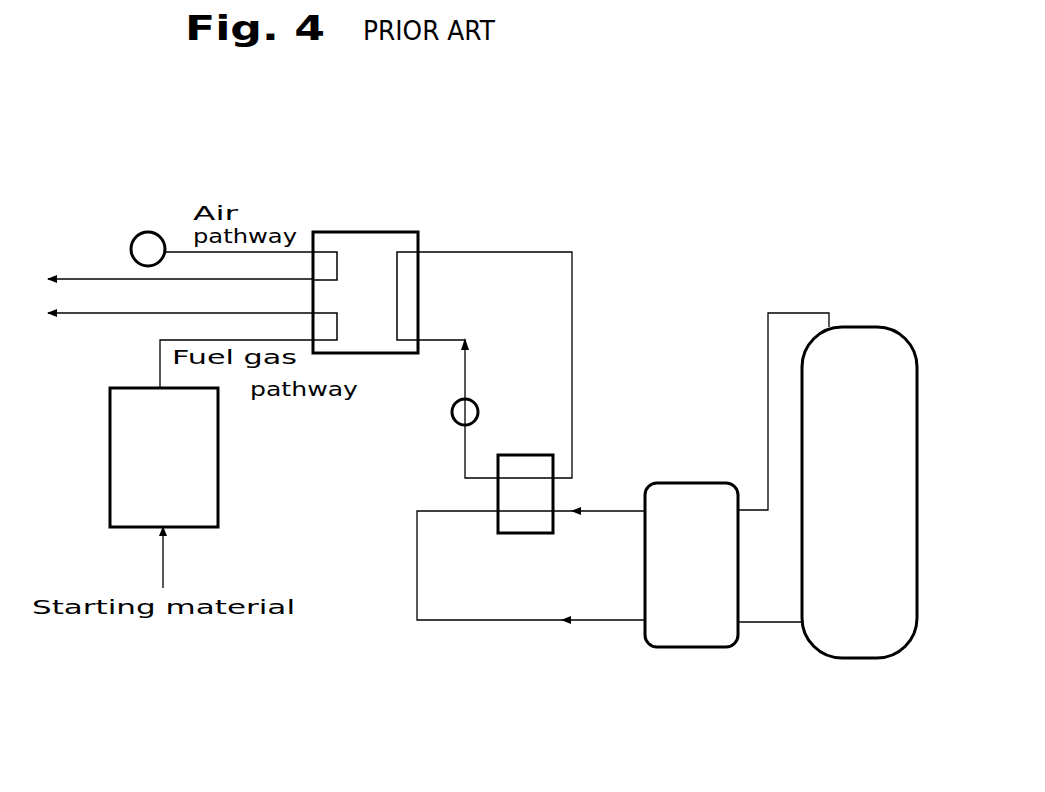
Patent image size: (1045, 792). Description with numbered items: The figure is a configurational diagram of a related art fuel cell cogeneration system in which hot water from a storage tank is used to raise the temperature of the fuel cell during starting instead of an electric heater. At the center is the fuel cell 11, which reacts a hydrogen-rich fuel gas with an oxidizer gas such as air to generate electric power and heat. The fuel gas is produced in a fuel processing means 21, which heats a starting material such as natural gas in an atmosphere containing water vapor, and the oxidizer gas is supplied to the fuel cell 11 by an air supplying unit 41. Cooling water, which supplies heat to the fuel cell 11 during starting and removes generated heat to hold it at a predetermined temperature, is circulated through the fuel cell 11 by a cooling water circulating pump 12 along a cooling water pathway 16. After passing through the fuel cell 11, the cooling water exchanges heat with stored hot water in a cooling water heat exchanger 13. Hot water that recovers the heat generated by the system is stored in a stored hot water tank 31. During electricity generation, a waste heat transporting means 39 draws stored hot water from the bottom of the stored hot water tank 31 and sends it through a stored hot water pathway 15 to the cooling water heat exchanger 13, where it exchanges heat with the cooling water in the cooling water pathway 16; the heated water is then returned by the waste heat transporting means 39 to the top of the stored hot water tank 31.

The fuel cell 11 is at (367, 252).
The cooling water circulating pump 12 is at (467, 410).
The cooling water heat exchanger 13 is at (515, 523).
The stored hot water pathway 15 is at (438, 618).
The cooling water pathway 16 is at (428, 252).
The fuel processing means 21 is at (203, 453).
The stored hot water tank 31 is at (880, 363).
The waste heat transporting means 39 is at (700, 643).
The air supplying unit 41 is at (143, 248).